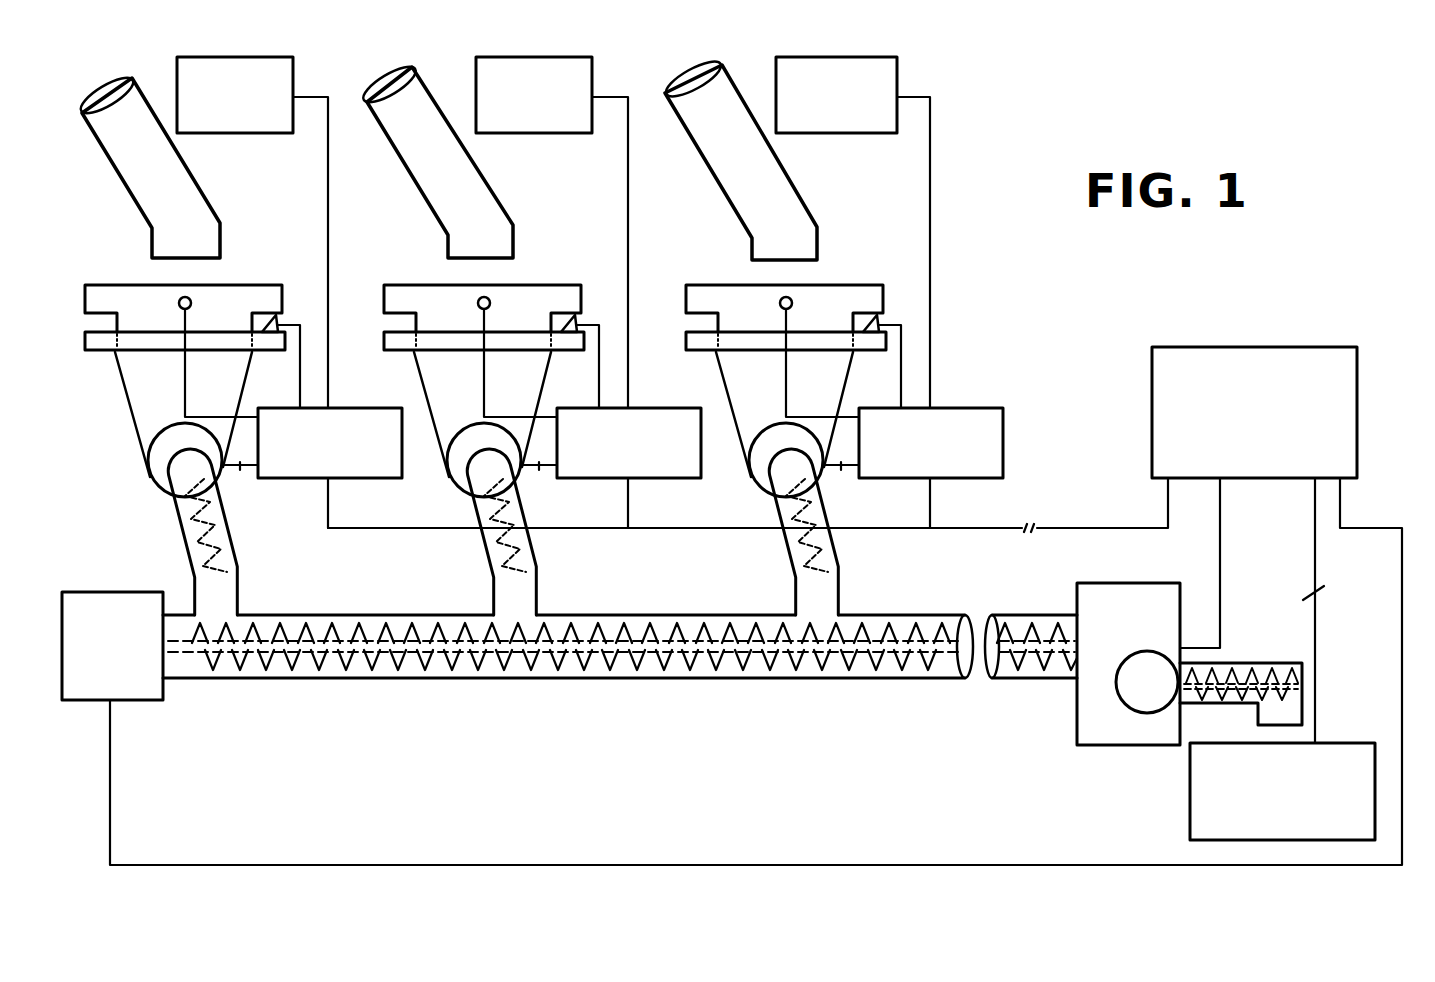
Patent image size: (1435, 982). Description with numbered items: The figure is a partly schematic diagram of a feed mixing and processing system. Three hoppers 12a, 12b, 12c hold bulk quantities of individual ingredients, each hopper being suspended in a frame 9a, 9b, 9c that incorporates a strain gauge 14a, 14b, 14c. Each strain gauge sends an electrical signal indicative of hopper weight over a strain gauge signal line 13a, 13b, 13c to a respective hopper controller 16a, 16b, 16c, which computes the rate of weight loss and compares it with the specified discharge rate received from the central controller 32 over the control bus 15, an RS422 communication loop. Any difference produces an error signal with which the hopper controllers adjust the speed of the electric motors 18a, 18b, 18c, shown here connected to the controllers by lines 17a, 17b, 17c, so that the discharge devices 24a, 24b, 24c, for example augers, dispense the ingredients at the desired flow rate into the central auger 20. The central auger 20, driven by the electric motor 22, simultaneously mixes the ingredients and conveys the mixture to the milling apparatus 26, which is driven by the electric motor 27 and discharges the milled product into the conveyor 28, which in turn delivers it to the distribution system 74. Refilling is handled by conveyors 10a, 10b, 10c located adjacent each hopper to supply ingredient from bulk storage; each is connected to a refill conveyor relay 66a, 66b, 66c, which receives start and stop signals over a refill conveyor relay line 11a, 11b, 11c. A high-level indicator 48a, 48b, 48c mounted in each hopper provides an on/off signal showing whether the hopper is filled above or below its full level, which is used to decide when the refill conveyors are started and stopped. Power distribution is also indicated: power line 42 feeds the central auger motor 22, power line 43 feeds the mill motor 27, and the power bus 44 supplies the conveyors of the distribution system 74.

The frame 9a is at (100, 350).
The frame 9b is at (471, 359).
The frame 9c is at (773, 359).
The conveyor 10a is at (195, 197).
The conveyor 10b is at (456, 159).
The conveyor 10c is at (758, 157).
The refill conveyor relay line 11a is at (328, 208).
The refill conveyor relay line 11b is at (637, 312).
The refill conveyor relay line 11c is at (940, 312).
The hopper 12a is at (115, 287).
The hopper 12b is at (478, 284).
The hopper 12c is at (780, 284).
The strain gauge signal line 13a is at (299, 387).
The strain gauge signal line 13b is at (574, 366).
The strain gauge signal line 13c is at (876, 366).
The strain gauge 14a is at (275, 318).
The strain gauge 14b is at (594, 308).
The strain gauge 14c is at (895, 308).
The control bus 15 is at (983, 528).
The hopper controller 16a is at (368, 412).
The hopper controller 16b is at (637, 430).
The hopper controller 16c is at (934, 425).
The motor control line 17a is at (242, 474).
The motor control line 17b is at (546, 486).
The motor control line 17c is at (847, 486).
The electric motor 18a is at (150, 478).
The electric motor 18b is at (469, 428).
The electric motor 18c is at (771, 428).
The central auger 20 is at (632, 616).
The electric motor 22 is at (94, 700).
The discharge device 24a is at (195, 548).
The discharge device 24b is at (482, 532).
The discharge device 24c is at (784, 532).
The milling apparatus 26 is at (1074, 707).
The electric motor 27 is at (1130, 666).
The conveyor 28 is at (1242, 664).
The central controller 32 is at (1284, 343).
The power line 42 is at (1400, 650).
The power line 43 is at (1217, 563).
The power bus 44 is at (1308, 588).
The high-level indicator 48a is at (192, 303).
The high-level indicator 48b is at (517, 354).
The high-level indicator 48c is at (819, 354).
The refill conveyor relay 66a is at (287, 80).
The refill conveyor relay 66b is at (559, 95).
The refill conveyor relay 66c is at (864, 94).
The distribution system 74 is at (1184, 799).